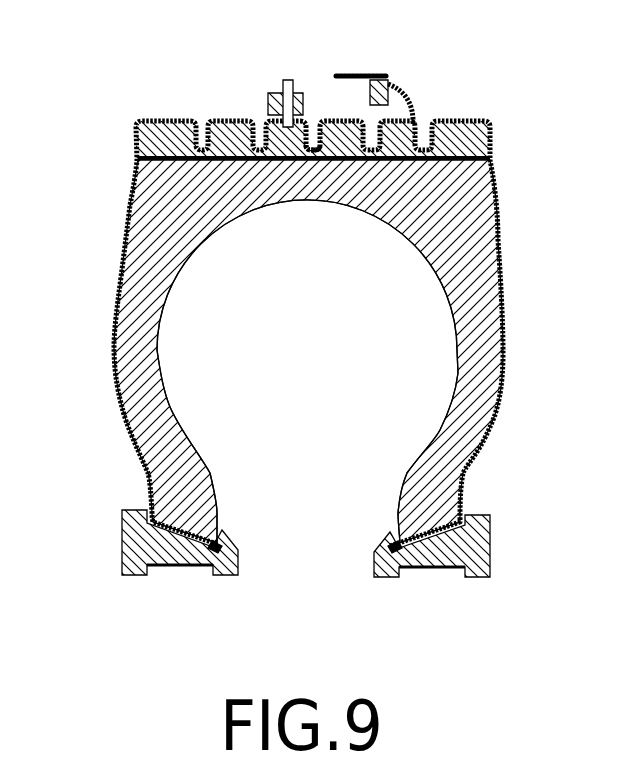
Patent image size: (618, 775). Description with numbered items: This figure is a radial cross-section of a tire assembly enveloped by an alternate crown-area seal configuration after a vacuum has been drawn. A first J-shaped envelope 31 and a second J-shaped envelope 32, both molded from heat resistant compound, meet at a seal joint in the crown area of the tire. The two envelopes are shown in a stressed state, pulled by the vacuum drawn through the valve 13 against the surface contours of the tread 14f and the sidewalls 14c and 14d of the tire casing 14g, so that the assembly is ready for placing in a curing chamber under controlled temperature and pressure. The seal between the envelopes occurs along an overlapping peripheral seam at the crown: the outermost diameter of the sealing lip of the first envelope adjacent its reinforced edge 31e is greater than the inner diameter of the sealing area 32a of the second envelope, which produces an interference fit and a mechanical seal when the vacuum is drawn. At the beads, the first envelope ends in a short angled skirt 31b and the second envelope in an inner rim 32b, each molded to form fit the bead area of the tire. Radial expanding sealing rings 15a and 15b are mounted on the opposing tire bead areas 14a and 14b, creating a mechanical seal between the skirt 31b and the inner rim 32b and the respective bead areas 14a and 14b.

The valve 13 is at (277, 86).
The reinforced edge 31e is at (316, 120).
The sealing area 32a is at (365, 80).
The tread 14f is at (458, 124).
The first J-shaped envelope 31 is at (130, 212).
The tire casing 14g is at (173, 235).
The second J-shaped envelope 32 is at (498, 252).
The sidewall 14d is at (470, 352).
The sidewall 14c is at (115, 364).
The tire bead area 14a is at (217, 518).
The tire bead area 14b is at (392, 520).
The radial expanding sealing ring 15a is at (128, 508).
The radial expanding sealing ring 15b is at (484, 516).
The short angled skirt 31b is at (216, 556).
The inner rim 32b is at (417, 556).